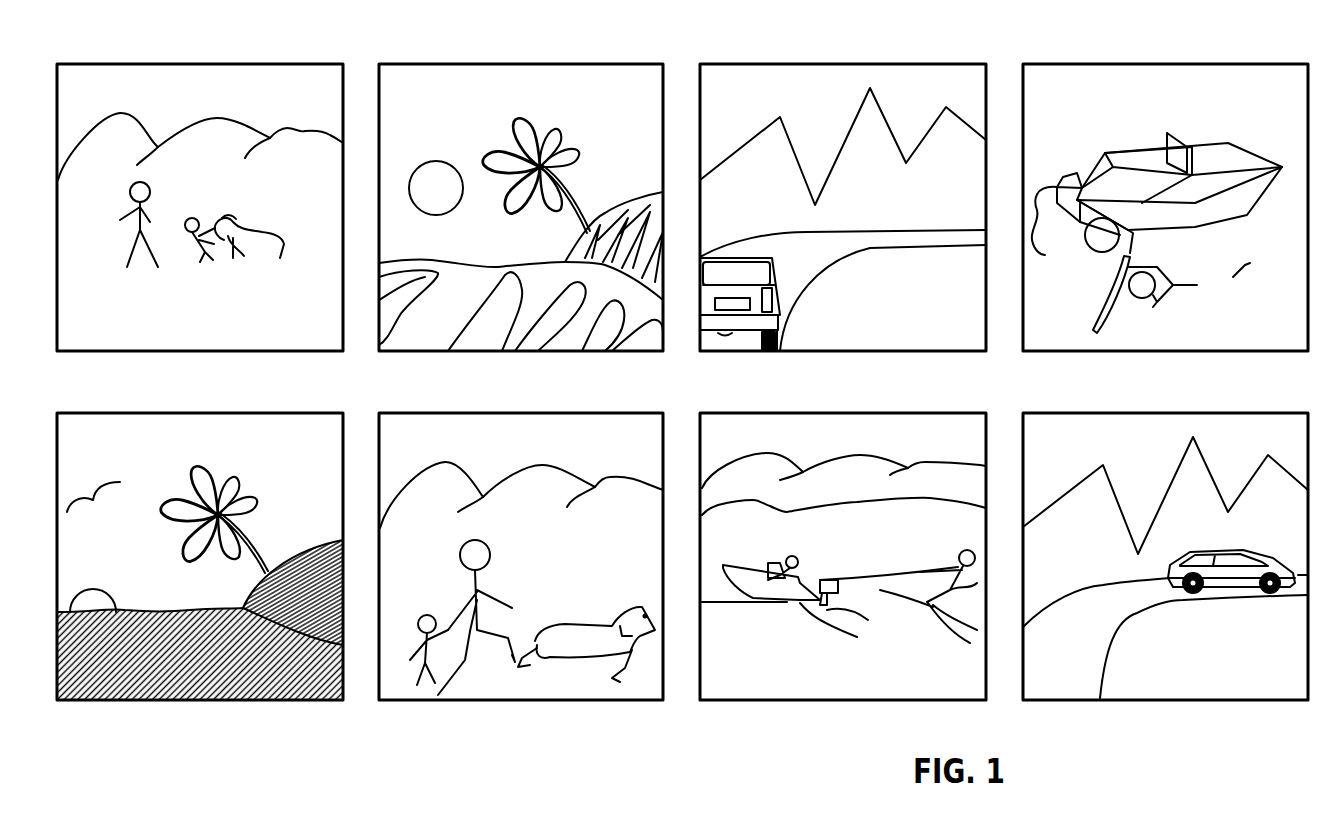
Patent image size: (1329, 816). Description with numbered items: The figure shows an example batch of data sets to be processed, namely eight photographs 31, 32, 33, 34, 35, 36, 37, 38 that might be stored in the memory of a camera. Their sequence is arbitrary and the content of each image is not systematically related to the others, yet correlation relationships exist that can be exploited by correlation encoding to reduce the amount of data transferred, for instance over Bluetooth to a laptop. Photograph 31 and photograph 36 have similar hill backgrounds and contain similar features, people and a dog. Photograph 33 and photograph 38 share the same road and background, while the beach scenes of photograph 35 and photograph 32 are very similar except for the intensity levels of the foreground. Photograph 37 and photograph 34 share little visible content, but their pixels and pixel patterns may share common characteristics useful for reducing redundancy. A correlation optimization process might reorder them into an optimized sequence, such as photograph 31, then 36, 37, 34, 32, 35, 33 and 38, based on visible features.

The photograph 31 is at (203, 64).
The photograph 32 is at (517, 64).
The photograph 33 is at (832, 64).
The photograph 34 is at (1150, 64).
The photograph 35 is at (173, 700).
The photograph 36 is at (537, 700).
The photograph 37 is at (858, 700).
The photograph 38 is at (1158, 700).